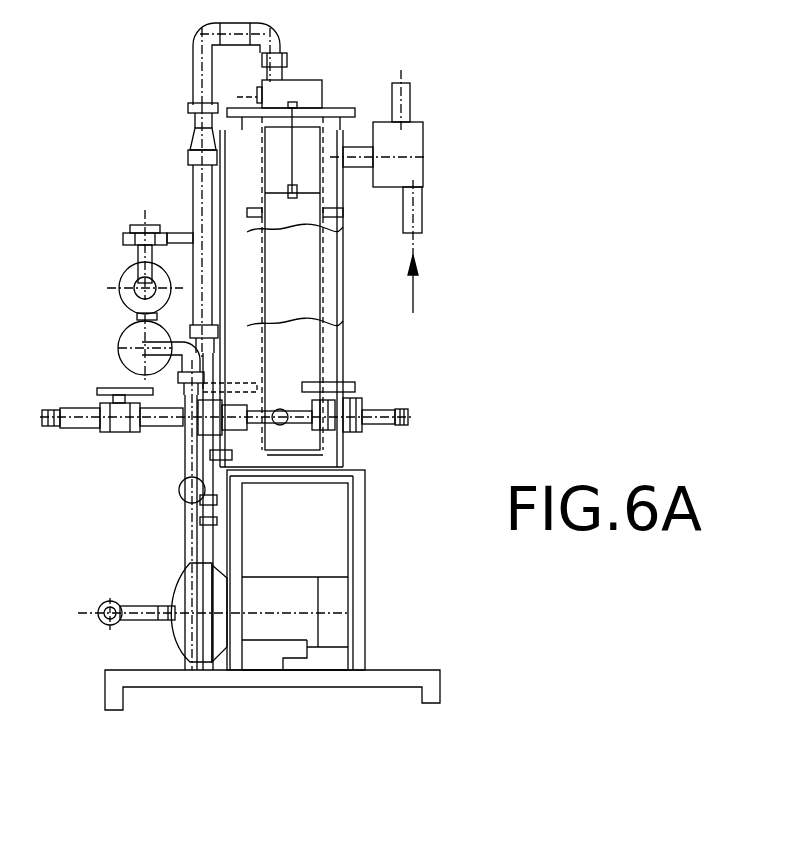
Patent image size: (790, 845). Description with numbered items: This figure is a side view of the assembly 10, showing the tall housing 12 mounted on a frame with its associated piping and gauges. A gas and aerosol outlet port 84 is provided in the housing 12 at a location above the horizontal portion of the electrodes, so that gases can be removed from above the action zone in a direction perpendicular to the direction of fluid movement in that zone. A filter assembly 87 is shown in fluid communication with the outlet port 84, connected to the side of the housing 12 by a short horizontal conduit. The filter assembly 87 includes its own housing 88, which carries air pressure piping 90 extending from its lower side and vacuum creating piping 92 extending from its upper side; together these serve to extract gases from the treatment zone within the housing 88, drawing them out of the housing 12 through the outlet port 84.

The treatment apparatus 10 is at (148, 170).
The housing 12 is at (350, 351).
The gas and aerosol outlet port 84 is at (365, 146).
The valve assembly 87 is at (437, 162).
The housing 88 is at (423, 122).
The air pressure piping 90 is at (423, 222).
The vacuum creating piping 92 is at (409, 93).